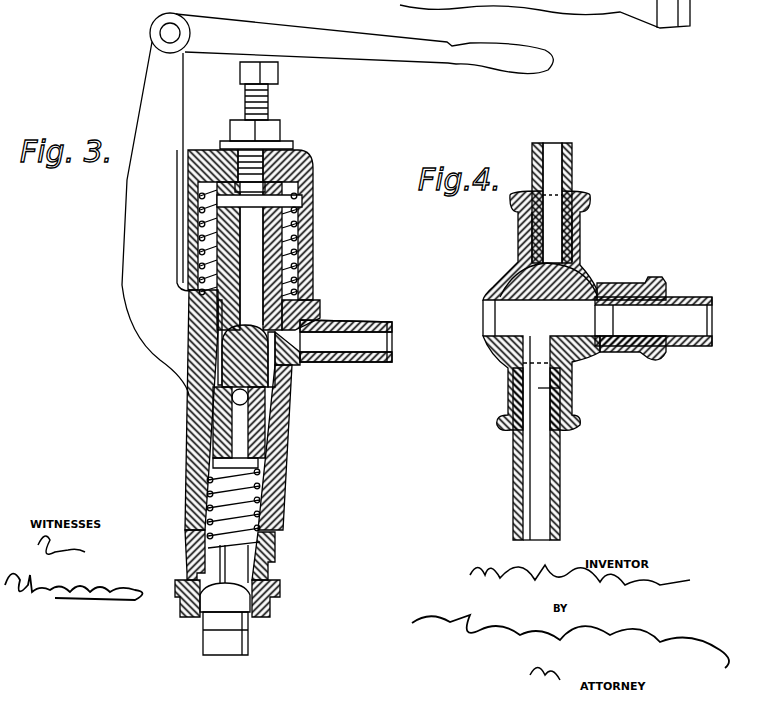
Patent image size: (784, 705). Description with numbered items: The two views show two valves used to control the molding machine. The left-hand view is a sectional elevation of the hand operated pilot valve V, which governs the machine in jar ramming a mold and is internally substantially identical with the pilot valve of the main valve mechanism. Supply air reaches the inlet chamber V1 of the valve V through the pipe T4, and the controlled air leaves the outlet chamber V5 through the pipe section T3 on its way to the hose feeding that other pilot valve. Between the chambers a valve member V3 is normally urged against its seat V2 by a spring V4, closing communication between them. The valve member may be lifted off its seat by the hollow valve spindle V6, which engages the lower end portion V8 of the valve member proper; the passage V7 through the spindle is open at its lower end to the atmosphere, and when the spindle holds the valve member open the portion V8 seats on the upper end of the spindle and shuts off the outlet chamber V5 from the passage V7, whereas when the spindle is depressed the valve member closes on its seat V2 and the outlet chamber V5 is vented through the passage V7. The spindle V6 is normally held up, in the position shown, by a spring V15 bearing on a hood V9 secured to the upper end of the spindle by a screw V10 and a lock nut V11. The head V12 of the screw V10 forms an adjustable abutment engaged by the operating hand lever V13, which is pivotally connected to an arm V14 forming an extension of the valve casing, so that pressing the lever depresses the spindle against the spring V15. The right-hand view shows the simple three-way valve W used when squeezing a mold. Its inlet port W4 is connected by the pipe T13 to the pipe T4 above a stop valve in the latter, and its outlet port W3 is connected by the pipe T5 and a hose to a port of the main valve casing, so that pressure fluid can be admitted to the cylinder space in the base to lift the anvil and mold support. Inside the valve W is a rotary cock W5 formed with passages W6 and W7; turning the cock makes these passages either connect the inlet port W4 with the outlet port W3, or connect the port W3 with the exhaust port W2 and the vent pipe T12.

In FIG. 3, the hand operated valve V is at (225, 436).
In FIG. 3, the inlet chamber V1 is at (268, 437).
In FIG. 3, the valve seat V2 is at (292, 363).
In FIG. 3, the valve member V3 is at (210, 377).
In FIG. 3, the spring V4 is at (208, 478).
In FIG. 3, the outlet chamber V5 is at (318, 308).
In FIG. 3, the hollow valve spindle V6 is at (298, 282).
In FIG. 3, the passage V7 is at (260, 250).
In FIG. 3, the lower end portion of valve member V8 is at (220, 340).
In FIG. 3, the hood V9 is at (313, 215).
In FIG. 3, the screw V10 is at (242, 148).
In FIG. 3, the lock nut V11 is at (280, 133).
In FIG. 3, the head of screw V12 is at (278, 82).
In FIG. 3, the operating hand lever V13 is at (358, 62).
In FIG. 3, the arm V14 is at (135, 188).
In FIG. 3, the spring V15 is at (197, 220).
In FIG. 3, the pipe section T3 is at (380, 345).
In FIG. 3, the pipe T4 is at (248, 642).
In FIG. 4, the three-way valve W is at (559, 365).
In FIG. 4, the exhaust port W2 is at (560, 252).
In FIG. 4, the outlet port W3 is at (560, 385).
In FIG. 4, the inlet port W4 is at (600, 303).
In FIG. 4, the rotary cock W5 is at (510, 287).
In FIG. 4, the passage W6 is at (495, 326).
In FIG. 4, the passage W7 is at (523, 363).
In FIG. 4, the vent pipe T12 is at (558, 165).
In FIG. 4, the pipe T13 is at (687, 303).
In FIG. 4, the pipe T5 is at (548, 473).